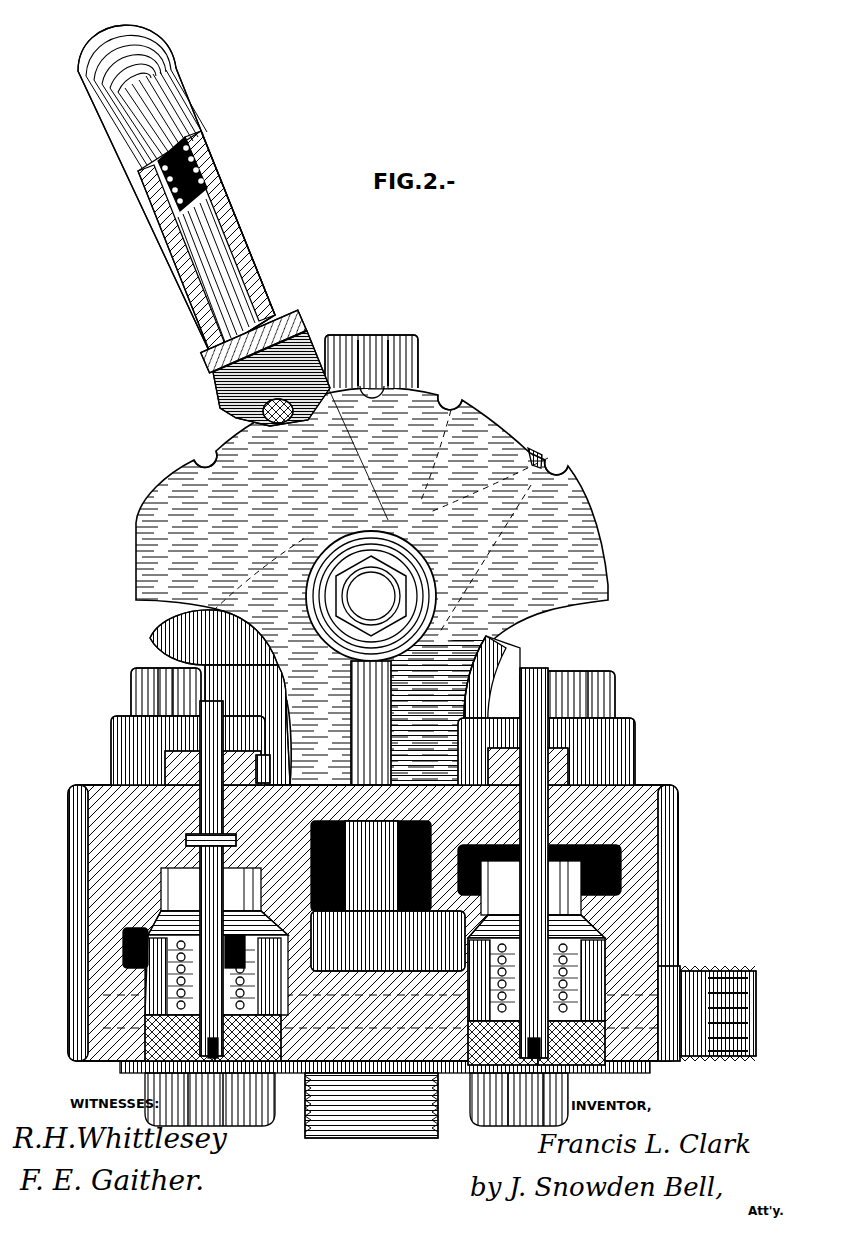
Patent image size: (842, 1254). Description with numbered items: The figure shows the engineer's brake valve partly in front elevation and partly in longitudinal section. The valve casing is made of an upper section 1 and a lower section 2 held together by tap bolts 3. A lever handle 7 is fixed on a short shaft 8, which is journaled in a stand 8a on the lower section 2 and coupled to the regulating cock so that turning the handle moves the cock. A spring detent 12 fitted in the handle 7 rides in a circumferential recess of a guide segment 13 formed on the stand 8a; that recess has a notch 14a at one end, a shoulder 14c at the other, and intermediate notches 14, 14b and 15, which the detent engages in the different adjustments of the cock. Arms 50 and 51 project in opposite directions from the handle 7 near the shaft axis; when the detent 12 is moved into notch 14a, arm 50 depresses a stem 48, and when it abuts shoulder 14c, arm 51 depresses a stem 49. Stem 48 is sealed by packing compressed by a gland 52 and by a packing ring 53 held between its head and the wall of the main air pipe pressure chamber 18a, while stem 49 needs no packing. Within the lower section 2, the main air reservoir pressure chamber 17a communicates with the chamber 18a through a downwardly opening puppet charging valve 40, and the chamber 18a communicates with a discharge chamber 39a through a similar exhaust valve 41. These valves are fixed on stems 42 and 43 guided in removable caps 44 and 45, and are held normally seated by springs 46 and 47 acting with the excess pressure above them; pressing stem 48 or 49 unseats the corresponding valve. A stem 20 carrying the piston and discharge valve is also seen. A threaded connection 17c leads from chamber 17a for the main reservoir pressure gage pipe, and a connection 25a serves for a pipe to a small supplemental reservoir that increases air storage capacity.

The lever handle 7 is at (204, 225).
The spring stop or detent 12 is at (255, 400).
The intermediate notch 14 is at (345, 408).
The guide segment 13 is at (385, 503).
The notch or depression 14a is at (196, 452).
The intermediate notch 14b is at (375, 370).
The shoulder 14c is at (552, 455).
The intermediate notch 15 is at (452, 394).
The arm 51 is at (528, 440).
The short shaft 8 is at (371, 596).
The stand 8a is at (349, 723).
The arm 50 is at (214, 637).
The tap bolts 3 is at (368, 693).
The upper section 1 is at (103, 748).
The lower section 2 is at (62, 880).
The stem 48 is at (195, 730).
The stem 49 is at (520, 803).
The gland 52 is at (262, 762).
The packing ring 53 is at (185, 830).
The main air pipe pressure chamber 18a is at (285, 845).
The stem 20 is at (371, 866).
The discharge chamber 39a is at (612, 855).
The charging valve 40 is at (211, 889).
The discharge or exhaust valve 41 is at (531, 888).
The main air reservoir pressure chamber 17a is at (115, 940).
The spring 46 is at (235, 988).
The spring 47 is at (542, 978).
The stem 42 is at (180, 1038).
The removable cap 44 is at (248, 1038).
The stem 43 is at (503, 1043).
The removable cap 45 is at (571, 1043).
The nozzle or threaded connection 17c is at (690, 1050).
The nozzle or connection 25a is at (380, 1112).